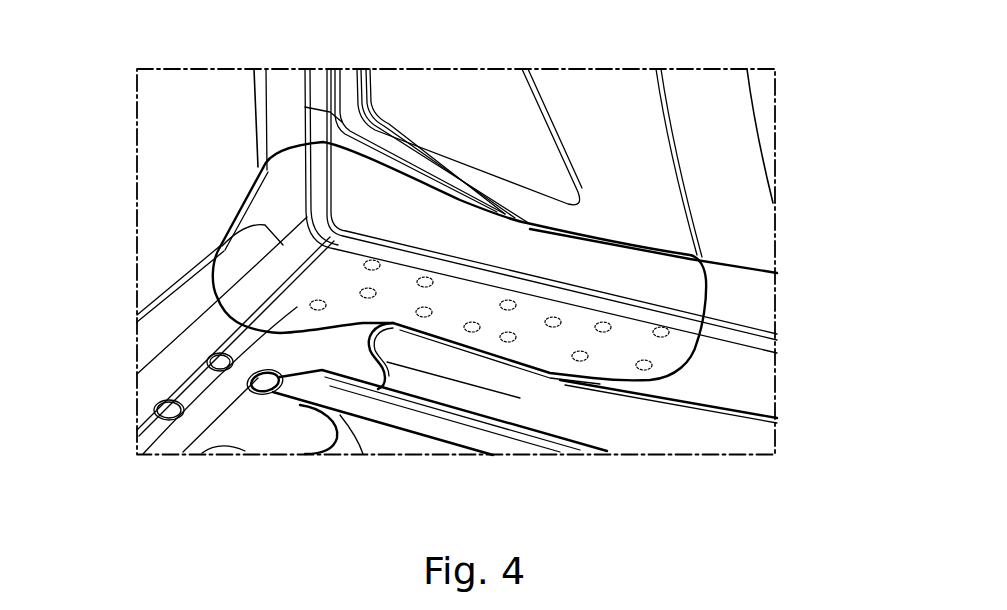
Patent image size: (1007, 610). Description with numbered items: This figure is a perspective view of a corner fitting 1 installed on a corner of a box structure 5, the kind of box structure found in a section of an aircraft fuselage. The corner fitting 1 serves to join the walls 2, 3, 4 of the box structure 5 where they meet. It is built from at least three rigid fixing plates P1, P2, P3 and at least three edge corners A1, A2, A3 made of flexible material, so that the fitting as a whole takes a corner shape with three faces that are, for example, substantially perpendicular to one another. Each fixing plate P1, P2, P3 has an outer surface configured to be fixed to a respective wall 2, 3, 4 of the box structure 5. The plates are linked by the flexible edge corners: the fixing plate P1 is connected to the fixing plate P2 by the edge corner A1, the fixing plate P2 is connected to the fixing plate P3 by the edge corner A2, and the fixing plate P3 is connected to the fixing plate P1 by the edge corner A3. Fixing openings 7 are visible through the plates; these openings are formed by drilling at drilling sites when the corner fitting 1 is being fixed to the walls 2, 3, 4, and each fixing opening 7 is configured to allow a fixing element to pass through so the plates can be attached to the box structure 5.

The corner fitting 1 is at (506, 150).
The wall 2 is at (610, 127).
The wall 3 is at (718, 365).
The wall 4 is at (213, 197).
The box structure 5 is at (716, 208).
The fixing opening 7 is at (369, 262).
The edge corner A1 is at (322, 167).
The edge corner A2 is at (245, 302).
The edge corner A3 is at (565, 300).
The fixing plate P1 is at (665, 280).
The fixing plate P2 is at (283, 208).
The fixing plate P3 is at (297, 308).